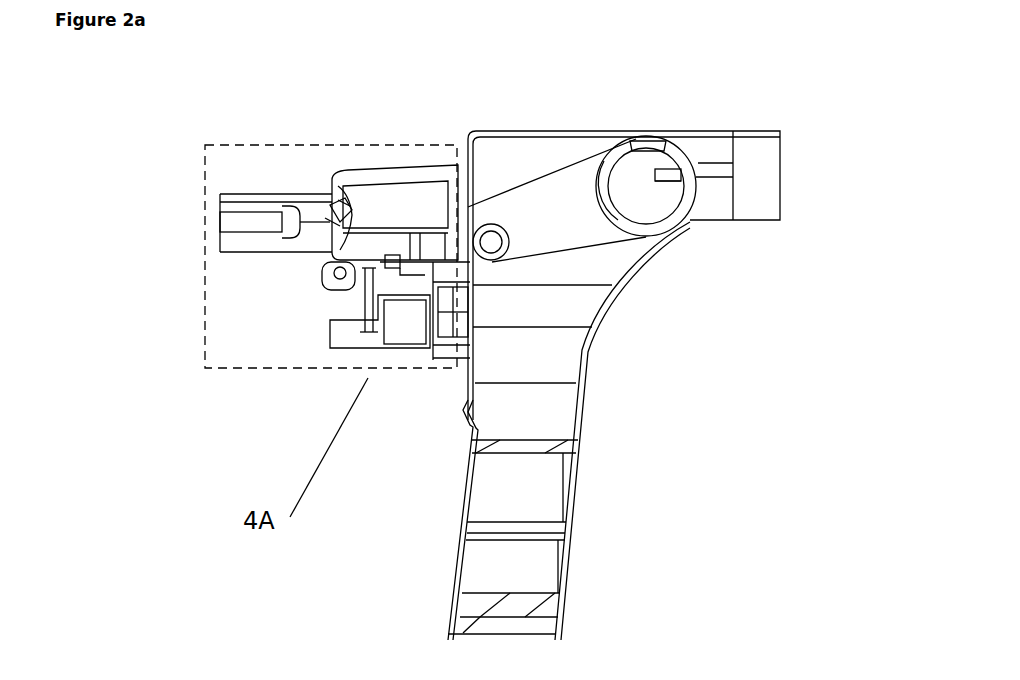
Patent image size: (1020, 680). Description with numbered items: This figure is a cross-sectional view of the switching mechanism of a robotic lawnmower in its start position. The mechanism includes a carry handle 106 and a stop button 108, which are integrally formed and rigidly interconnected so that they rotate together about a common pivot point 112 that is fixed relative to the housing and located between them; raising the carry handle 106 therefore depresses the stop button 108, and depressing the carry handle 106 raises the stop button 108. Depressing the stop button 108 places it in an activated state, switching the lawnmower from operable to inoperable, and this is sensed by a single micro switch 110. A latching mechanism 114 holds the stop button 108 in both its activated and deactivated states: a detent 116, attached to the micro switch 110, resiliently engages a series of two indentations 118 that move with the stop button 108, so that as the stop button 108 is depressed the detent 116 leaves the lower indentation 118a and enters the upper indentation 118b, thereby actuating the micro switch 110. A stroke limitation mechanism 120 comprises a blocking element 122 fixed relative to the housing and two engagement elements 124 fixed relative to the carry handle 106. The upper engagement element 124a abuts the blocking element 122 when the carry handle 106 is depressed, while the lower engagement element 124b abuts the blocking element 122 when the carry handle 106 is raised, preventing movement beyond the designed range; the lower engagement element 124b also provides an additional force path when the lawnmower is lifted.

The carry handle 106 is at (697, 150).
The stop button 108 is at (361, 158).
The micro switch 110 is at (338, 310).
The common pivot point 112 is at (490, 213).
The latching mechanism 114 is at (310, 240).
The detent 116 is at (331, 251).
The indentations 118 is at (172, 132).
The lower indentation 118a is at (315, 217).
The upper indentation 118b is at (329, 208).
The stroke limitation mechanism 120 is at (722, 163).
The blocking element 122 is at (709, 176).
The engagement elements 124 is at (660, 47).
The upper engagement element 124a is at (669, 149).
The lower engagement element 124b is at (665, 195).